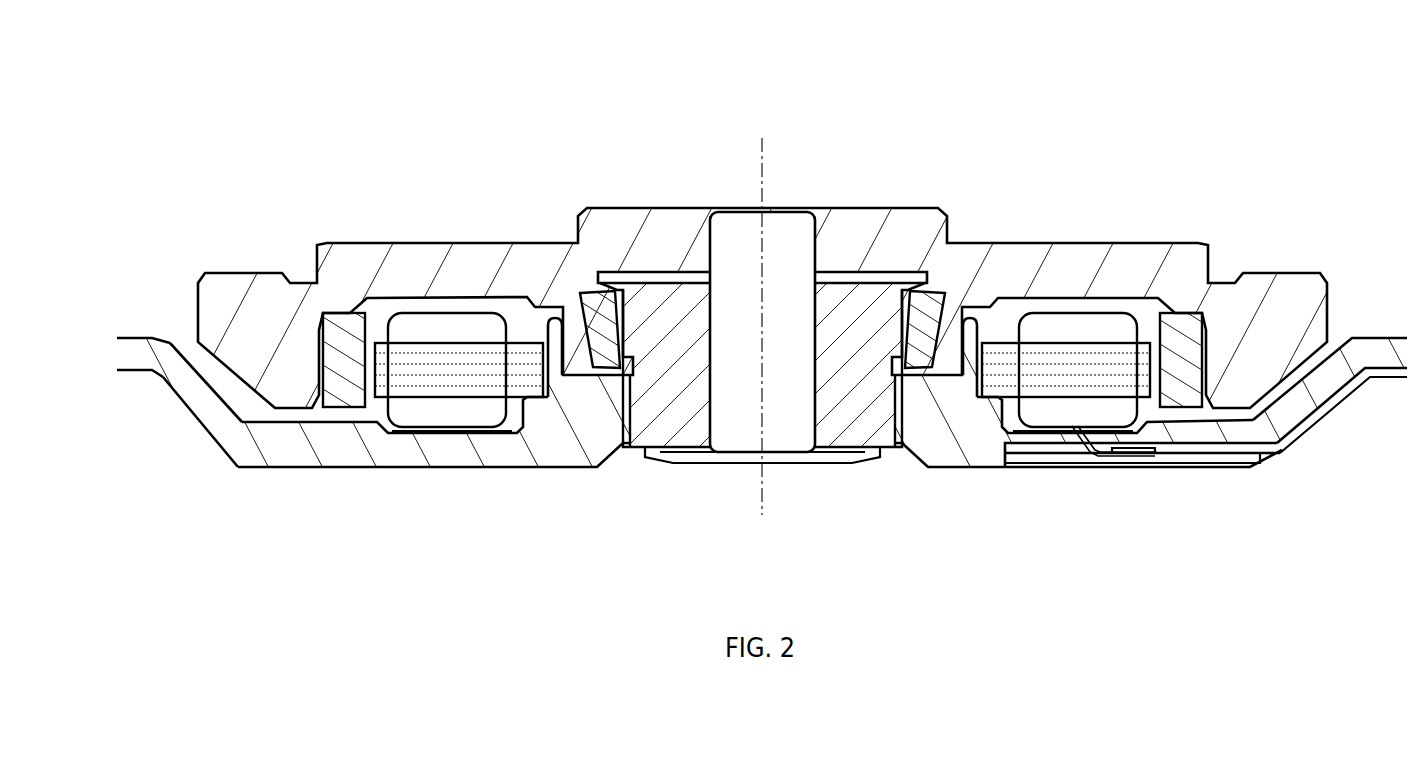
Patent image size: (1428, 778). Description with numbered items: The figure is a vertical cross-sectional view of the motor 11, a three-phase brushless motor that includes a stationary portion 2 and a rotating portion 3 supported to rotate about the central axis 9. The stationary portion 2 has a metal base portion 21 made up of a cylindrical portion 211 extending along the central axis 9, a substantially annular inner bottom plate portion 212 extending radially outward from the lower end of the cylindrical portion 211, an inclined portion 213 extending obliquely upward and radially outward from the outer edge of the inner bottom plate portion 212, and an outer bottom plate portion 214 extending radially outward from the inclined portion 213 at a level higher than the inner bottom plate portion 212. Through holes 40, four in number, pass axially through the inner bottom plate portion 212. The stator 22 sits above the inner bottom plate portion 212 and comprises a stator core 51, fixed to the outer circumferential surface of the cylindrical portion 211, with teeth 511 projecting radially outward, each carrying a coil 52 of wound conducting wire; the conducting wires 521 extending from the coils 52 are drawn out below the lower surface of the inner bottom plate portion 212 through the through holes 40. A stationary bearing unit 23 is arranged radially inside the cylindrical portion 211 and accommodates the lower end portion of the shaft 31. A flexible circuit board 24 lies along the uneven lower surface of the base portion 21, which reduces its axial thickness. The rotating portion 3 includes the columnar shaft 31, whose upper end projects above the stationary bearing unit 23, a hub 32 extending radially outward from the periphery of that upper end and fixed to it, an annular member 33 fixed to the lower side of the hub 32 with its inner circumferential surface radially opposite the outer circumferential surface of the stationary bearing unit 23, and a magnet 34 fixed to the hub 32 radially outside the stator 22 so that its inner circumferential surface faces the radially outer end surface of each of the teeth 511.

The motor 11 is at (423, 177).
The stationary portion 2 is at (160, 458).
The base portion 21 is at (467, 472).
The cylindrical portion 211 is at (600, 405).
The inner bottom plate portion 212 is at (393, 453).
The inclined portion 213 is at (207, 403).
The outer bottom plate portion 214 is at (130, 357).
The circuit board 24 is at (1390, 375).
The stator 22 is at (1105, 190).
The stator core 51 is at (1010, 330).
The teeth 511 is at (1107, 340).
The coils 52 is at (1060, 327).
The conducting wires 521 is at (1197, 458).
The stationary bearing unit 23 is at (670, 410).
The rotating portion 3 is at (910, 187).
The shaft 31 is at (793, 220).
The hub 32 is at (630, 220).
The annular member 33 is at (590, 300).
The magnet 34 is at (1180, 323).
The through holes 40 is at (1077, 450).
The central axis 9 is at (762, 153).